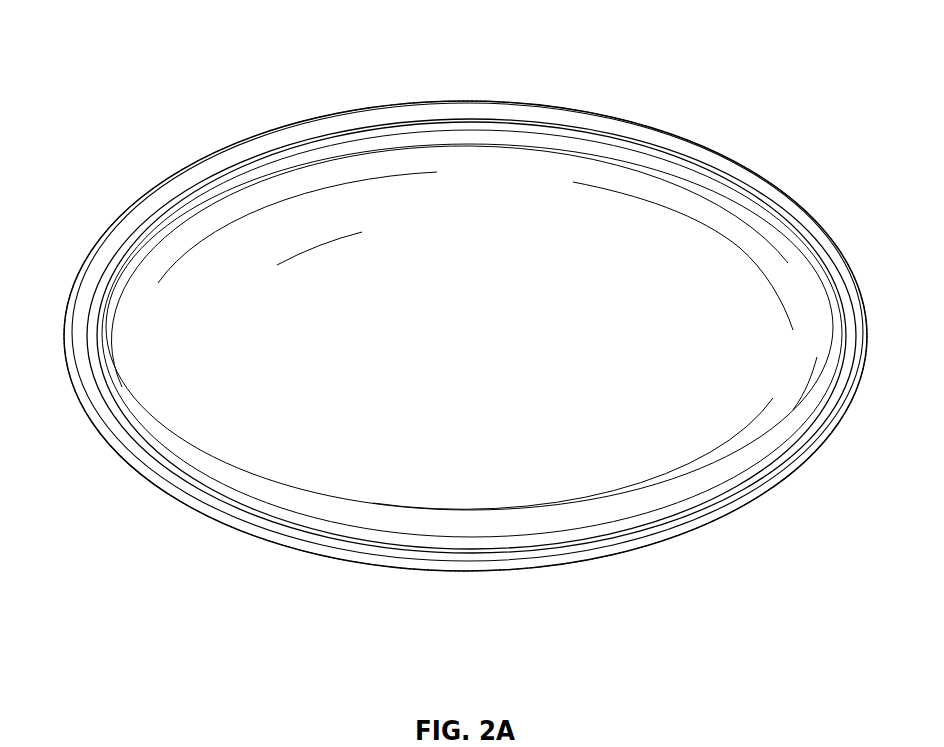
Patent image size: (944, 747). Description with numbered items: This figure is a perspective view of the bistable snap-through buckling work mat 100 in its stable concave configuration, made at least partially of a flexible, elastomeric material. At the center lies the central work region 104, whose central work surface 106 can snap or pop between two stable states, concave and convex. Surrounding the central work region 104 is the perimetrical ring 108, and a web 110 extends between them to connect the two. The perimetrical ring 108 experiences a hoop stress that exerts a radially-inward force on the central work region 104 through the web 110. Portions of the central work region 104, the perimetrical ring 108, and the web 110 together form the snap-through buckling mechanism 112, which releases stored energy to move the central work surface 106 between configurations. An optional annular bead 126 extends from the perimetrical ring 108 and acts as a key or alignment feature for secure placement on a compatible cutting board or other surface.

The bistable snap-through buckling work mat 100 is at (762, 112).
The central work region 104 is at (479, 356).
The central work surface 106 is at (580, 465).
The perimetrical ring 108 is at (583, 118).
The web 110 is at (117, 273).
The snap-through buckling mechanism 112 is at (87, 342).
The annular bead 126 is at (153, 487).